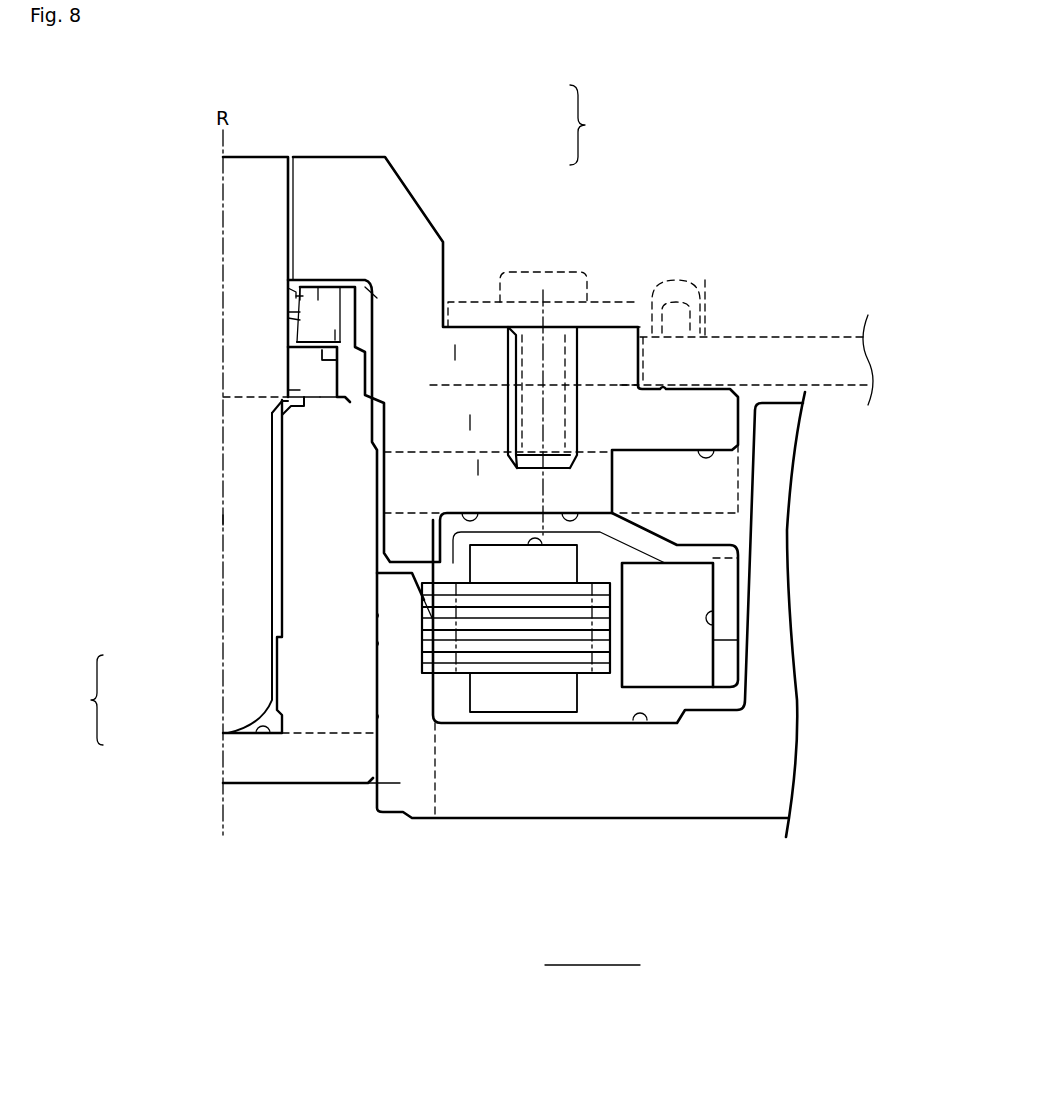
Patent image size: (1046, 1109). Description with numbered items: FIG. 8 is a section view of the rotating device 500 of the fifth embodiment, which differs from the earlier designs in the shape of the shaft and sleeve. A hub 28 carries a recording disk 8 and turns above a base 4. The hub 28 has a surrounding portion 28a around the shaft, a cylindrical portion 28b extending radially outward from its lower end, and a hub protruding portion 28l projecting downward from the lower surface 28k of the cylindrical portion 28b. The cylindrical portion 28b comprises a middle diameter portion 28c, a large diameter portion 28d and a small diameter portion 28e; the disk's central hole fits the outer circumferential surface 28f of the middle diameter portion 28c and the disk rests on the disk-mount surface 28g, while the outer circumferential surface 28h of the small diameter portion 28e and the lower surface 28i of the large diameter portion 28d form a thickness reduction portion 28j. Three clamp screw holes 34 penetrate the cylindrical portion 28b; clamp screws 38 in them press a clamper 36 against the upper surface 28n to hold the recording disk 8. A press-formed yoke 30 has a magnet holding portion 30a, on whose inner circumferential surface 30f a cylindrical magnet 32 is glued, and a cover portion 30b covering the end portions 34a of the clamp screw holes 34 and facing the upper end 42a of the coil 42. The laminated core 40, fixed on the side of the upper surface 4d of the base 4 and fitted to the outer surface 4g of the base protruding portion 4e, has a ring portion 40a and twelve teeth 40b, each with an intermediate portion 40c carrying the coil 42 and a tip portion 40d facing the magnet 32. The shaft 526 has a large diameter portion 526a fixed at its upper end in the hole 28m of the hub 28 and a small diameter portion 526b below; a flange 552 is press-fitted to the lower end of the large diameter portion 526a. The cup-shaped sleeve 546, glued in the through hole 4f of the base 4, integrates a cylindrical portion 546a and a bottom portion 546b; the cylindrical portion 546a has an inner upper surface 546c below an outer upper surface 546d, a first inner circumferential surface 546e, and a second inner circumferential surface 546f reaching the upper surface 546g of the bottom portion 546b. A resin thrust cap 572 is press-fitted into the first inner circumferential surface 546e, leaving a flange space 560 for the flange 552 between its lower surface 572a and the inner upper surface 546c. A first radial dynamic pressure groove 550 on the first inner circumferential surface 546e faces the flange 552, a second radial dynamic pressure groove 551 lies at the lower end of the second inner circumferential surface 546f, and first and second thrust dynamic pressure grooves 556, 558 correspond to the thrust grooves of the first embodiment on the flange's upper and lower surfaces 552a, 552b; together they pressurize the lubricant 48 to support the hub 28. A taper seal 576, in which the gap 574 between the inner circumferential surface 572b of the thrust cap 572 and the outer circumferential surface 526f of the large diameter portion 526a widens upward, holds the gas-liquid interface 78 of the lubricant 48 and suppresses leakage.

The rotating device 500 is at (485, 1058).
The base 4 is at (757, 800).
The upper surface of the base 4d is at (640, 720).
The base protruding portion 4e is at (410, 782).
The through hole 4f is at (373, 662).
The outer surface of the base protruding portion 4g is at (422, 645).
The recording disk 8 is at (785, 337).
The hub 28 is at (345, 177).
The surrounding portion 28a is at (390, 213).
The cylindrical portion 28b is at (598, 125).
The middle diameter portion 28c is at (463, 353).
The large diameter portion 28d is at (477, 420).
The small diameter portion 28e is at (483, 467).
The outer circumferential surface of the middle diameter portion 28f is at (655, 355).
The disk-mount surface 28g is at (696, 382).
The outer circumferential surface of the small diameter portion 28h is at (615, 477).
The lower surface of the large diameter portion 28i is at (718, 453).
The thickness reduction portion 28j is at (713, 495).
The lower surface of the cylindrical portion 28k is at (473, 512).
The hub protruding portion 28l is at (400, 548).
The hole of the hub 28m is at (283, 177).
The upper surface of the cylindrical portion 28n is at (628, 328).
The yoke 30 is at (727, 592).
The magnet holding portion 30a is at (727, 640).
The cover portion 30b is at (615, 520).
The inner circumferential surface of the magnet holding portion 30f is at (710, 618).
The cylindrical magnet 32 is at (662, 663).
The clamp screw hole 34 is at (555, 362).
The end portion of the clamp screw hole 34a is at (588, 512).
The clamper 36 is at (605, 300).
The clamp screw 38 is at (537, 270).
The laminated core 40 is at (478, 645).
The ring portion 40a is at (445, 655).
The teeth 40b is at (592, 983).
The intermediate portion 40c is at (555, 655).
The tip portion 40d is at (600, 655).
The coil 42 is at (502, 560).
The upper end of the coil 42a is at (535, 548).
The lubricant 48 is at (290, 317).
The gas-liquid interface 78 is at (290, 297).
The shaft 526 is at (245, 232).
The large diameter portion 526a is at (292, 302).
The small diameter portion 526b is at (245, 520).
The outer circumferential surface of the large diameter portion 526f is at (288, 198).
The sleeve 546 is at (214, 571).
The cylindrical portion 546a is at (298, 618).
The bottom portion 546b is at (250, 758).
The inner upper surface 546c is at (300, 395).
The outer upper surface 546d is at (343, 345).
The first inner circumferential surface 546e is at (335, 332).
The second inner circumferential surface 546f is at (278, 488).
The upper surface of the bottom portion 546g is at (268, 736).
The first radial dynamic pressure groove 550 is at (335, 370).
The second radial dynamic pressure groove 551 is at (268, 672).
The flange 552 is at (300, 383).
The bearing inner ring 552a is at (290, 345).
The bearing outer ring 552b is at (320, 400).
The first thrust dynamic pressure groove 556 is at (240, 347).
The second thrust dynamic pressure groove 558 is at (244, 415).
The flange space 560 is at (300, 372).
The thrust cap 572 is at (328, 300).
The lower surface of the thrust cap 572a is at (318, 290).
The inner circumferential surface of the thrust cap 572b is at (298, 288).
The gap 574 is at (290, 290).
The taper seal 576 is at (290, 320).